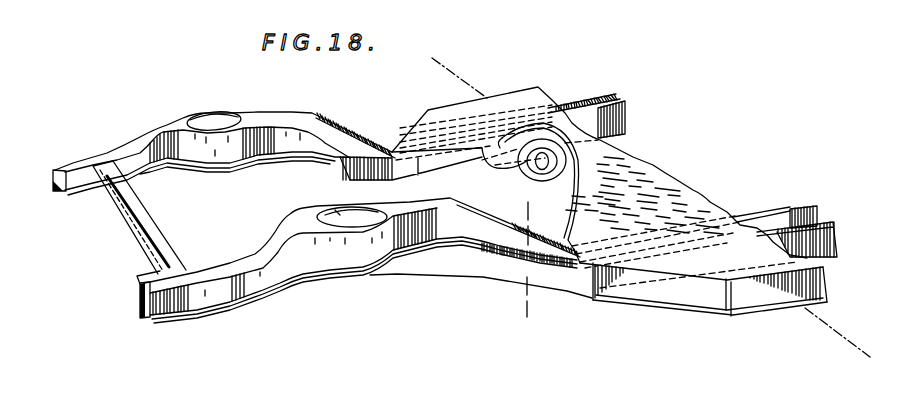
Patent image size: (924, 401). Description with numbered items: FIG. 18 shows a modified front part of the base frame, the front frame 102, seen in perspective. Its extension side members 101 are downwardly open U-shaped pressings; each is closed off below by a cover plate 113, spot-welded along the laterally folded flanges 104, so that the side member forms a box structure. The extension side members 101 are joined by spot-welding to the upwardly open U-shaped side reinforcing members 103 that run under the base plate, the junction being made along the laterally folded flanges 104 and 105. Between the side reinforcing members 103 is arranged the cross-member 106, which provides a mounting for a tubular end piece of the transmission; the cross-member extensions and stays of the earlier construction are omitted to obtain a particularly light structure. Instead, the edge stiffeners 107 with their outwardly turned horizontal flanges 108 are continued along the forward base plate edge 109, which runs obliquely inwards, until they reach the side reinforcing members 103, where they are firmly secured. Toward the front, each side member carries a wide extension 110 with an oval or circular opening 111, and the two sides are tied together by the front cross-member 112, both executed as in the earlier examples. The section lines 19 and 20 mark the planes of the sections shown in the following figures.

The section line 19- 19 is at (532, 213).
The section line 20- 20 is at (445, 62).
The extension side member 101 is at (366, 259).
The front frame 102 is at (240, 212).
The side reinforcing member 103 is at (820, 248).
The laterally folded flange 104 is at (437, 240).
The laterally folded flange 105 is at (603, 105).
The cross-member 106 is at (643, 163).
The edge stiffener 107 is at (815, 290).
The outwardly turned horizontal flange 108 is at (762, 306).
The forward base plate edge 109 is at (657, 273).
The wide extension 110 is at (352, 241).
The opening 111 is at (340, 217).
The front cross-member 112 is at (152, 228).
The cover plate 113 is at (233, 307).